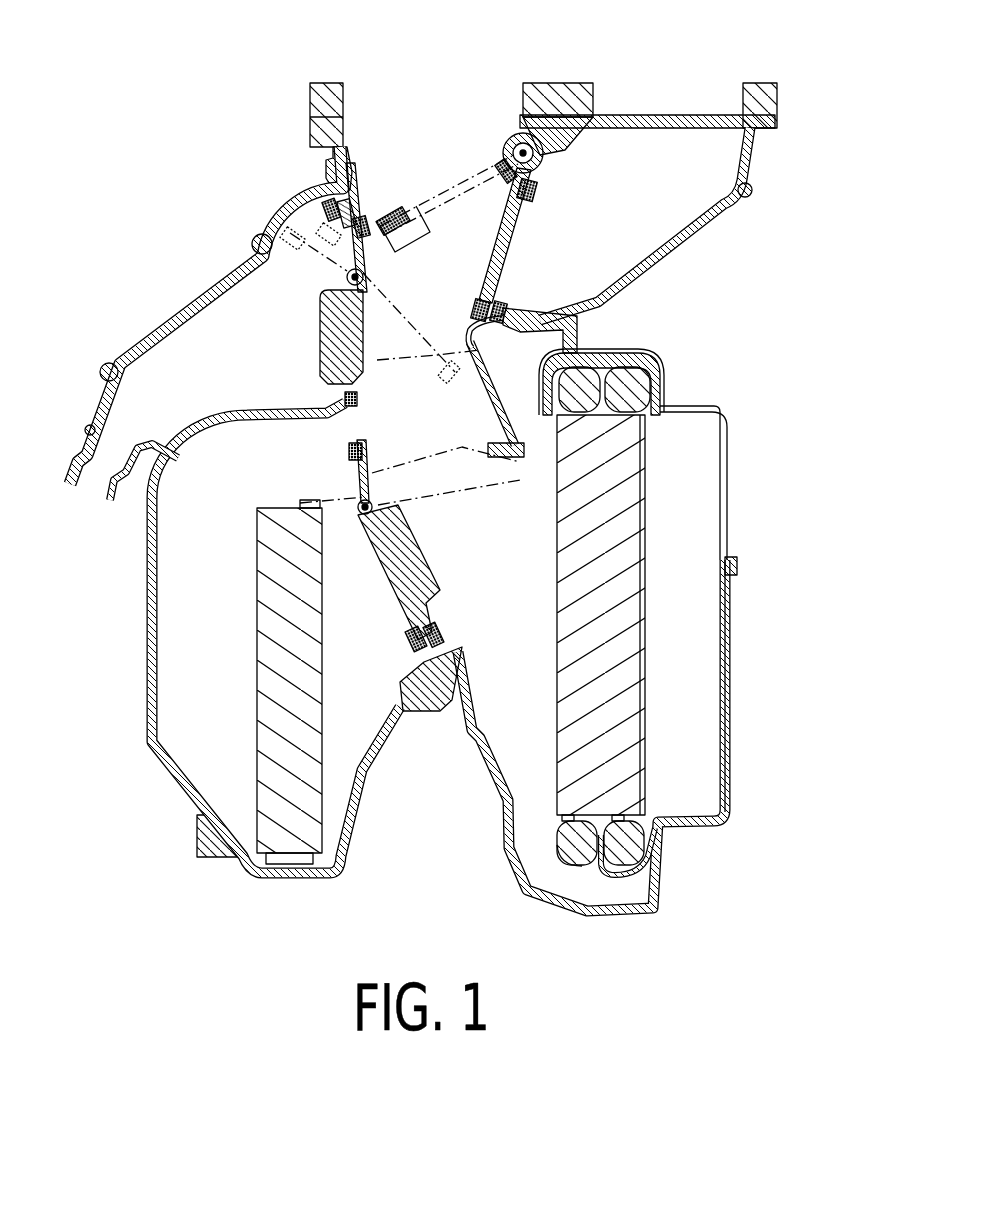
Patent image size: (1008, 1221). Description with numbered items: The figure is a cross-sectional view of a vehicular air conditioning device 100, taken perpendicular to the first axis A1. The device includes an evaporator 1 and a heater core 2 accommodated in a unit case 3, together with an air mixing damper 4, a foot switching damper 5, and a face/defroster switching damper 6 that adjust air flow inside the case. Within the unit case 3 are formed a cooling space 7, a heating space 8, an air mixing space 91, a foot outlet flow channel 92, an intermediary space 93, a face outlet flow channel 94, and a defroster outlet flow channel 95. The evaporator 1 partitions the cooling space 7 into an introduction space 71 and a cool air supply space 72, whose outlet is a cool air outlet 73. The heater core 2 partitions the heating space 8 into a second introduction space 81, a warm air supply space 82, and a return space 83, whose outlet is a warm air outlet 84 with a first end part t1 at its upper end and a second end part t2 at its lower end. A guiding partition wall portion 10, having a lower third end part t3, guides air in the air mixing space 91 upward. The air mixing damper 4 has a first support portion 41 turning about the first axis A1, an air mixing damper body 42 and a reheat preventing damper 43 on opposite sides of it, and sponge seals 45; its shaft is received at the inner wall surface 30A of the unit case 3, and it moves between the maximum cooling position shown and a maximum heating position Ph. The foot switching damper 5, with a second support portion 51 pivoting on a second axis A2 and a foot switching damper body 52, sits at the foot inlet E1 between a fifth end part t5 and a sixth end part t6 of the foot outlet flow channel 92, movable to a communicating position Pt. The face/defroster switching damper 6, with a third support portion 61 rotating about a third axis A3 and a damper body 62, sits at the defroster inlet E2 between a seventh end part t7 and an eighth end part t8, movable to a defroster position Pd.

The vehicular air conditioning device 100 is at (143, 101).
The face outlet flow channel 94 is at (380, 105).
The third support portion 61 is at (515, 131).
The face/defroster switching damper 6 is at (492, 216).
The defroster position Pd is at (445, 178).
The fifth end part t5 is at (360, 200).
The intermediary space 93 is at (448, 238).
The third axis A3 is at (548, 152).
The seventh end part t7 is at (548, 178).
The face/defroster switching damper body 62 is at (518, 240).
The defroster inlet E2 is at (515, 258).
The eighth end part t8 is at (500, 300).
The defroster outlet flow channel 95 is at (657, 200).
The foot switching damper 5 is at (312, 320).
The foot inlet E1 is at (332, 273).
The second axis A2 is at (372, 277).
The second support portion 51 is at (368, 290).
The foot switching damper body 52 is at (333, 327).
The foot outlet flow channel 92 is at (175, 360).
The communicating position Pt is at (345, 361).
The sixth end part t6 is at (340, 388).
The first end part t1 is at (345, 420).
The reheat preventing damper 43 is at (378, 462).
The warm air outlet 84 is at (346, 494).
The first support portion 41 is at (397, 488).
The maximum heating position Ph is at (455, 490).
The first axis A1 is at (372, 515).
The air mixing damper body 42 is at (413, 557).
The sponge seal 45 is at (447, 617).
The third end part t3 is at (540, 492).
The introduction space 71 is at (684, 521).
The cooling space 7 is at (790, 500).
The air mixing space 91 is at (452, 528).
The cool air supply space 72 is at (527, 572).
The unit case 3 is at (740, 683).
The inner wall surface 30A is at (523, 702).
The evaporator 1 is at (637, 767).
The return space 83 is at (270, 465).
The heating space 8 is at (86, 540).
The second introduction space 81 is at (345, 565).
The warm air supply space 82 is at (205, 650).
The heater core 2 is at (268, 712).
The air mixing damper 4 is at (380, 592).
The second end part t2 is at (459, 660).
The cool air outlet 73 is at (478, 625).
The guiding partition wall portion 10 is at (503, 397).